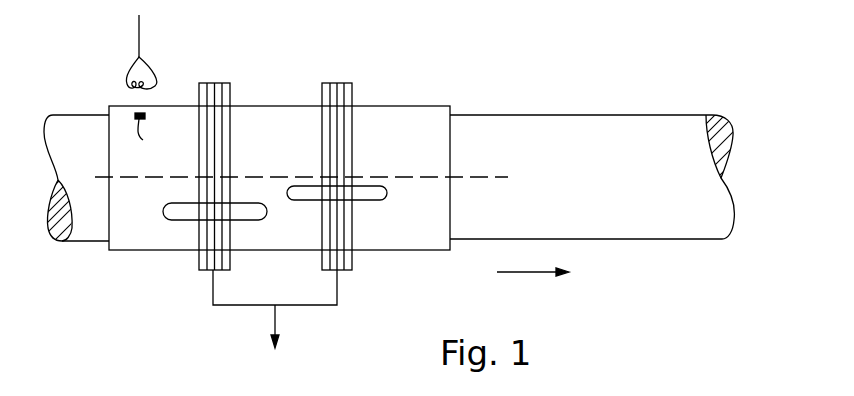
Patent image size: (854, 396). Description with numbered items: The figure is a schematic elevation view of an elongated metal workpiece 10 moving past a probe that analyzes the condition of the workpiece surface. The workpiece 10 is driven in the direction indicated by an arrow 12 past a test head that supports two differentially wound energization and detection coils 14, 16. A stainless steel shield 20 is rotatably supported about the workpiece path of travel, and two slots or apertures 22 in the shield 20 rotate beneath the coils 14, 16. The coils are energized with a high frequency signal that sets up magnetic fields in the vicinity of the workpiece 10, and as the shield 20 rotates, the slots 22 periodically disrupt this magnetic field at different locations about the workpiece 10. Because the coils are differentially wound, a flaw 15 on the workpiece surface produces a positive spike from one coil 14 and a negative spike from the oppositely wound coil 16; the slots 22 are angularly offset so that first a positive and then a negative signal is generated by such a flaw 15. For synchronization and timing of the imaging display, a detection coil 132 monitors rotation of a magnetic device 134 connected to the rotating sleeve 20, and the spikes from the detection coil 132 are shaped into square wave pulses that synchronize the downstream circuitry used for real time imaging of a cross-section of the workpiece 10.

The elongated metal workpiece 10 is at (77, 116).
The arrow 12 is at (530, 274).
The differentially wound energization and detection coil 14 is at (214, 83).
The deep flaw 15 is at (470, 177).
The oppositely wound detection coil 16 is at (337, 83).
The stainless steel shield 20 is at (275, 116).
The slots or apertures 22 is at (187, 221).
The detection coil 132 is at (165, 78).
The magnetic device 134 is at (153, 136).